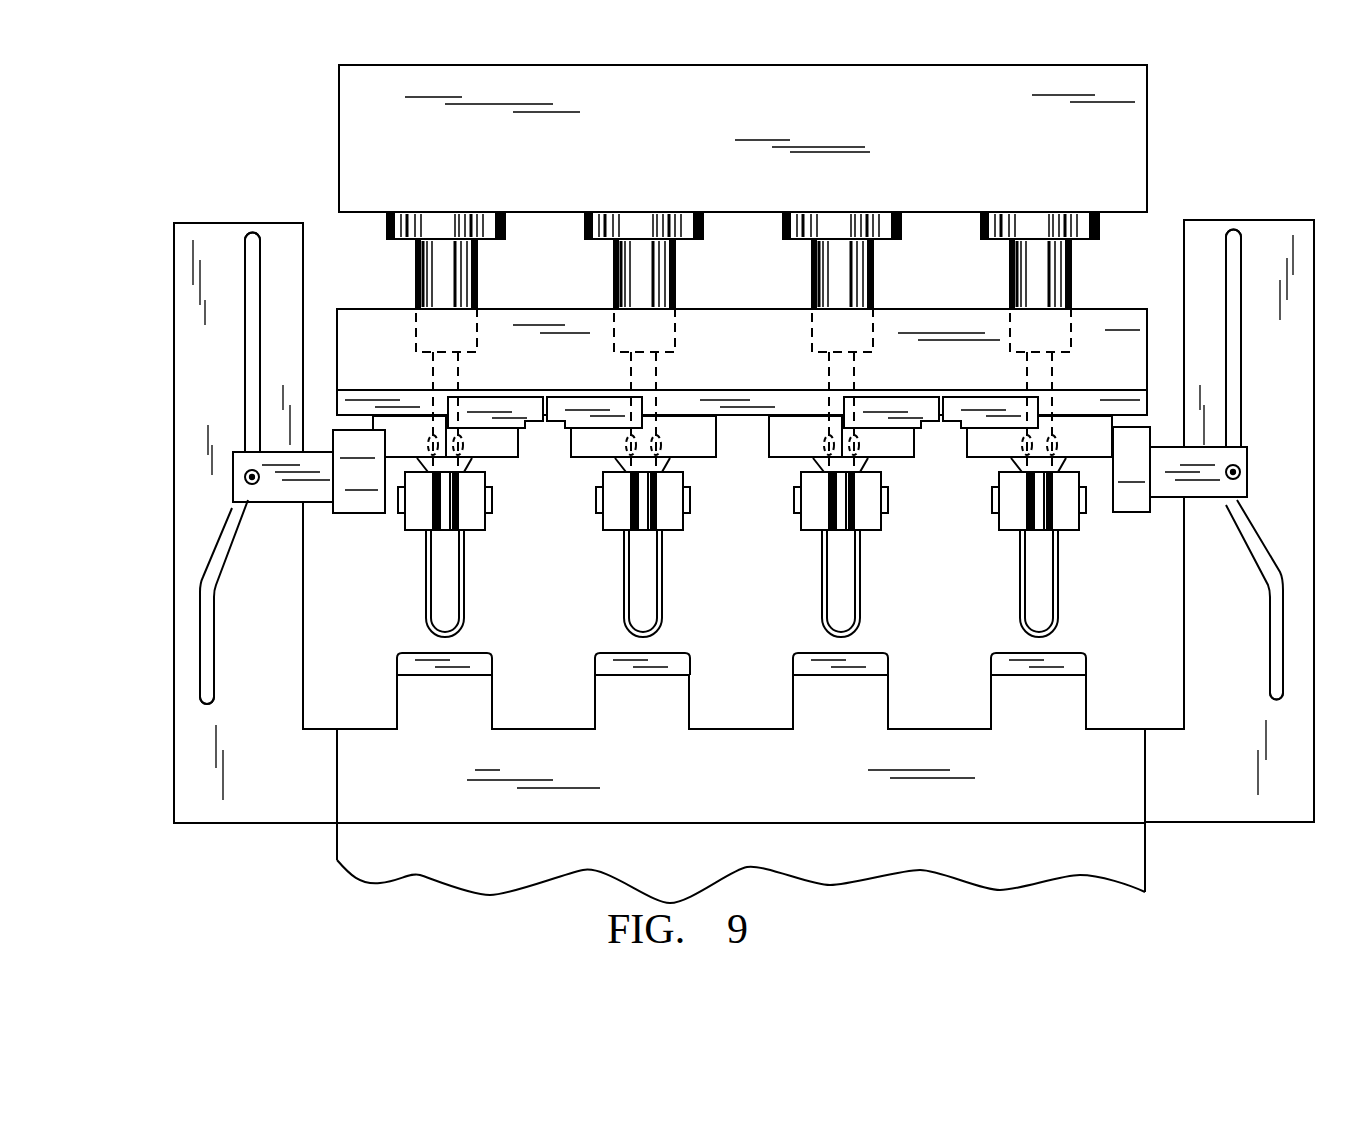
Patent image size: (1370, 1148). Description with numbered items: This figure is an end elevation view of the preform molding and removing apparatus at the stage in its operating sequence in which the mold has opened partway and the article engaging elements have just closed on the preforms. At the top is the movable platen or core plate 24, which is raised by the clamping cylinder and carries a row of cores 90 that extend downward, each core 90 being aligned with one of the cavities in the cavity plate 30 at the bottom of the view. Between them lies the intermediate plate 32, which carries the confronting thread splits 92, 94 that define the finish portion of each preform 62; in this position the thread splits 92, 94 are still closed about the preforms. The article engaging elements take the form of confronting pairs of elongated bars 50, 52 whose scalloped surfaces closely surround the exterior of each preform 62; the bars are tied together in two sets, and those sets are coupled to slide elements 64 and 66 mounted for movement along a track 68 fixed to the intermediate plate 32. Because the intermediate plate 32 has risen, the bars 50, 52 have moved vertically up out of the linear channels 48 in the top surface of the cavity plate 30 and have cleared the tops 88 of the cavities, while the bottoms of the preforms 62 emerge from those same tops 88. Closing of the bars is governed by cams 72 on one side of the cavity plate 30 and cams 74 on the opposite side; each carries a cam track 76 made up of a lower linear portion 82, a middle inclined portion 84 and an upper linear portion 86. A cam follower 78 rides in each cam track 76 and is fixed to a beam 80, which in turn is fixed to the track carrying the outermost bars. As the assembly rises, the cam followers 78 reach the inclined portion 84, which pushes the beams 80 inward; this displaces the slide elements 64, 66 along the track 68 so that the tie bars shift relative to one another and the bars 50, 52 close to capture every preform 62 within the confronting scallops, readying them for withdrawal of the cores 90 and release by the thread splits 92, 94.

The movable platen or core plate 24 is at (352, 127).
The cavity plate 30 is at (1115, 802).
The intermediate plate 32 is at (380, 327).
The linear channels 48 is at (726, 683).
The elongated bar 50 is at (808, 528).
The elongated bar 52 is at (873, 527).
The preform 62 is at (467, 612).
The slide element 64 is at (555, 406).
The slide element 66 is at (487, 406).
The track 68 is at (800, 400).
The cam 72 is at (277, 236).
The cam 74 is at (1265, 248).
The cam track 76 is at (254, 305).
The cam follower 78 is at (247, 482).
The beam 80 is at (1197, 487).
The lower linear portion 82 is at (205, 672).
The middle inclined portion 84 is at (223, 541).
The upper linear portion 86 is at (253, 338).
The tops of the cavities 88 is at (421, 652).
The core 90 is at (463, 372).
The thread split 92 is at (595, 447).
The thread split 94 is at (488, 443).